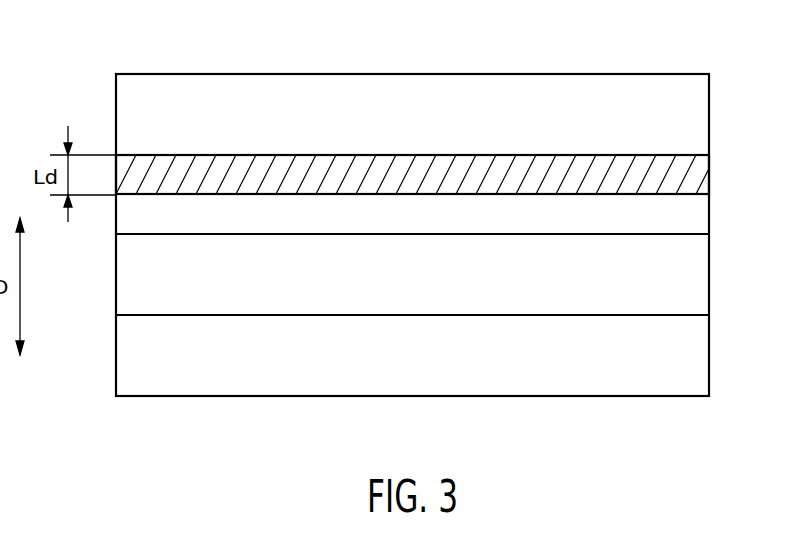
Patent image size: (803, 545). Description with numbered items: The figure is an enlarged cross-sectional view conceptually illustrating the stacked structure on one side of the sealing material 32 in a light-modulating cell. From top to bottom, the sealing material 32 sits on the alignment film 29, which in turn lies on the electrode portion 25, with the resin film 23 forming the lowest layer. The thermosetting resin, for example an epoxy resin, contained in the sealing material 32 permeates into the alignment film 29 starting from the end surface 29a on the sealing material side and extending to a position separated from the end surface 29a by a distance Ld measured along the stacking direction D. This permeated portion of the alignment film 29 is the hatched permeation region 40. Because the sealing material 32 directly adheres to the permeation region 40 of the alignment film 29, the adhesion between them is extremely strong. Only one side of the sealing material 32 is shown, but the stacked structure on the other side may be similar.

The sealing material 32 is at (694, 119).
The permeation region 40 is at (694, 178).
The alignment film 29 is at (694, 217).
The end surface 29a is at (596, 155).
The electrode portion 25 is at (694, 278).
The resin film 23 is at (694, 358).